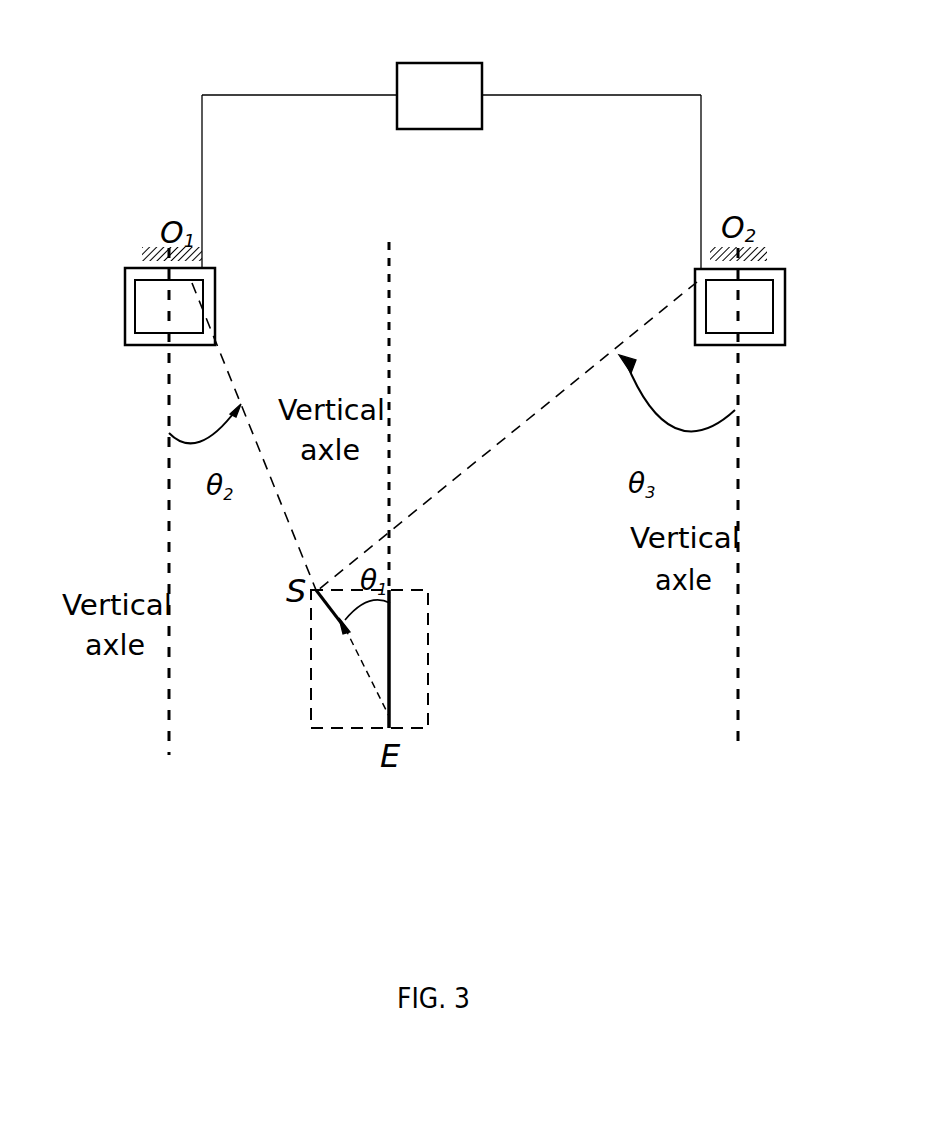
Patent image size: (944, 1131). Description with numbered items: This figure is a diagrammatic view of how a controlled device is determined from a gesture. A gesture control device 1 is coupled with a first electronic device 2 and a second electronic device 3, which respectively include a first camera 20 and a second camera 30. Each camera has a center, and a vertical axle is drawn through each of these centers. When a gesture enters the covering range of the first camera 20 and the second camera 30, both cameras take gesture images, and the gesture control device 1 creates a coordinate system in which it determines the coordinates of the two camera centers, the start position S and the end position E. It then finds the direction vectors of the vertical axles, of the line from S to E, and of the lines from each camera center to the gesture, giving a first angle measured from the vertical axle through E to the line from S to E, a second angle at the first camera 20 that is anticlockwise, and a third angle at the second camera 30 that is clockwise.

The gesture control device 1 is at (460, 70).
The first electronic device 2 is at (125, 268).
The first camera 20 is at (157, 247).
The second electronic device 3 is at (781, 276).
The second camera 30 is at (759, 248).